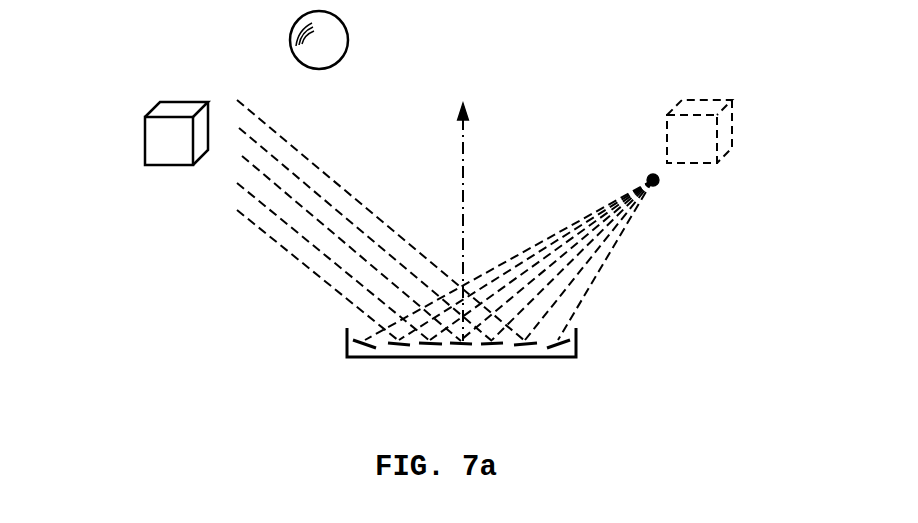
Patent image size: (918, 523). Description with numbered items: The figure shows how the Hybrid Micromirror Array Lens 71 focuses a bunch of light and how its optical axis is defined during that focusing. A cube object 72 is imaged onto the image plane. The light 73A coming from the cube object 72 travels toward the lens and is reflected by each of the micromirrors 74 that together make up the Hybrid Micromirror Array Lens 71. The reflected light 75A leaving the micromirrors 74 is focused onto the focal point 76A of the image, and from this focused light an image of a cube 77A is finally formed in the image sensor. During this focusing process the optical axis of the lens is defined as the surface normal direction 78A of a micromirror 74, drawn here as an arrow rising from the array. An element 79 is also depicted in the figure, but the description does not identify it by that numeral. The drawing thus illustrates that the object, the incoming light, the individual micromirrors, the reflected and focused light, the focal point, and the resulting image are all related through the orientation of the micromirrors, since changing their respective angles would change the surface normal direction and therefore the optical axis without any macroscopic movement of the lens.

The Hybrid Micromirror Array Lens 71 is at (340, 340).
The cube object 72 is at (140, 138).
The light from the object 73A is at (268, 245).
The micromirror 74 is at (577, 357).
The reflected light 75A is at (602, 278).
The focal point 76A is at (660, 187).
The image of a cube 77A is at (733, 125).
The surface normal direction 78A is at (468, 152).
The observer eye 79 is at (350, 36).